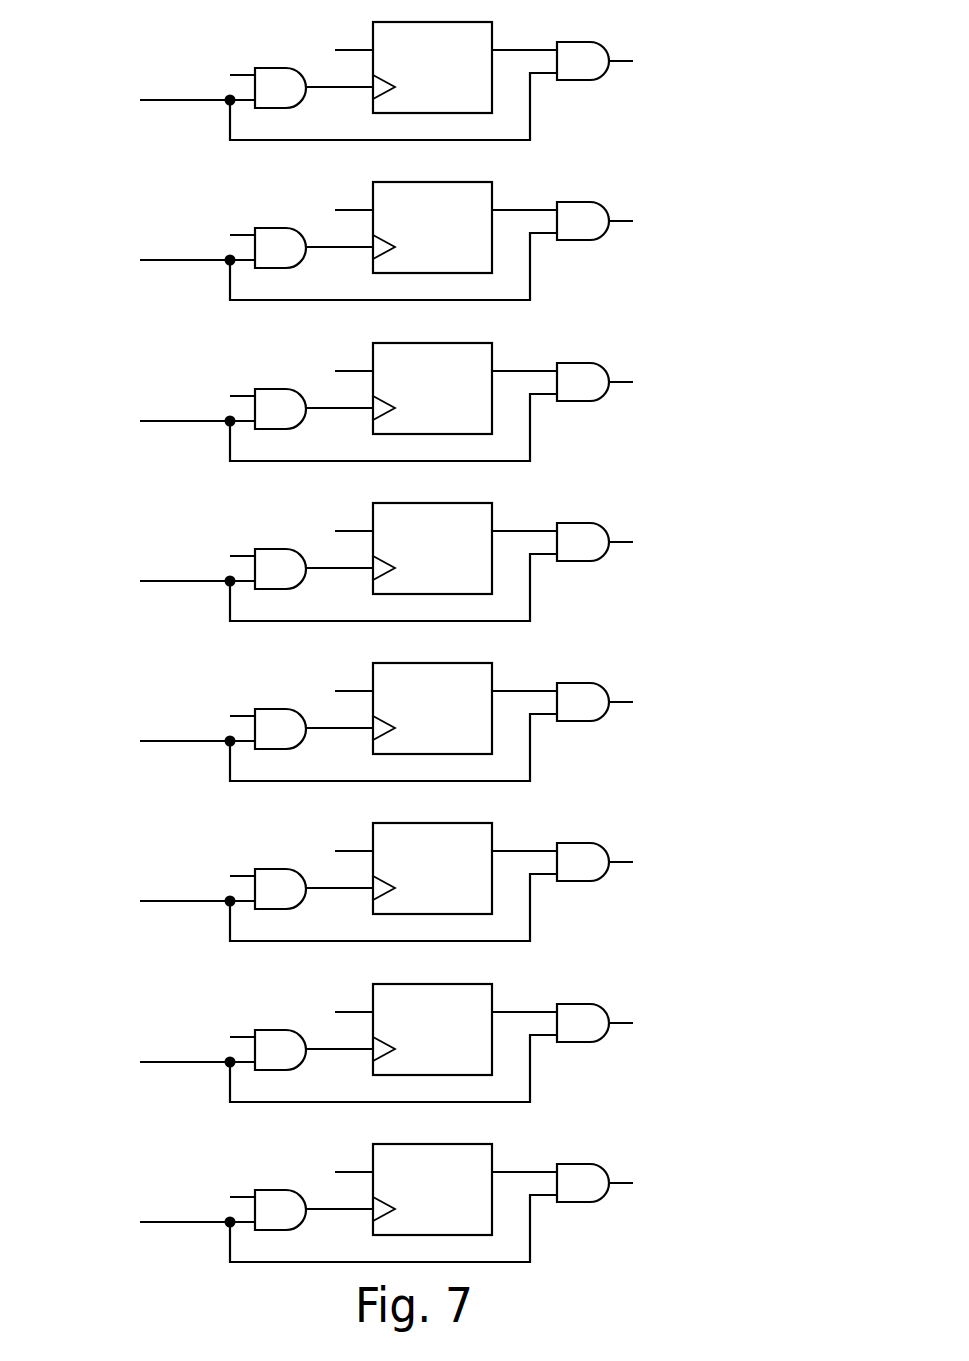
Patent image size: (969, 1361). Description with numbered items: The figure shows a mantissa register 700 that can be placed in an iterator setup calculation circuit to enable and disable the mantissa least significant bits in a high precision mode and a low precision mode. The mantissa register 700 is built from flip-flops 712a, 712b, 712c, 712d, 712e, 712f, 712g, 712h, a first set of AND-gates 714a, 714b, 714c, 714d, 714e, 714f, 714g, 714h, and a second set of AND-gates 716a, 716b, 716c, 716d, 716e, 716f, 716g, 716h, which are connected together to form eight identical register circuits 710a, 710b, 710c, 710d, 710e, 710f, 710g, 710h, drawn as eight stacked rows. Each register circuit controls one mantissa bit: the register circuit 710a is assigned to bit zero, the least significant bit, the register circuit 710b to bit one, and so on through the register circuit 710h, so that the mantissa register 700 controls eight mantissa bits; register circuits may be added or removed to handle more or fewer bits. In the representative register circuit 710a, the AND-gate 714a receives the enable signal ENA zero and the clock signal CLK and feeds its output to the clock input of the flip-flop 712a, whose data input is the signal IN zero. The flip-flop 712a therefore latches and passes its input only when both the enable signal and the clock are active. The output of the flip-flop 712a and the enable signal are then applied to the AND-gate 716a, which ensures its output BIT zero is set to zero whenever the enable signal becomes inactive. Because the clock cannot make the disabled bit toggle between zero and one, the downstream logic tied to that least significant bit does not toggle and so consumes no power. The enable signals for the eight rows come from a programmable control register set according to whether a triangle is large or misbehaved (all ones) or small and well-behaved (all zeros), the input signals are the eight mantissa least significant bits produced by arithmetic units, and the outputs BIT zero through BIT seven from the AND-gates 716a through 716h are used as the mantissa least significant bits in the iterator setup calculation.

The mantissa register 700 is at (126, 50).
The register circuit 710a is at (560, 98).
The register circuit 710b is at (382, 234).
The register circuit 710c is at (382, 395).
The register circuit 710d is at (382, 555).
The register circuit 710e is at (382, 715).
The register circuit 710f is at (382, 875).
The register circuit 710g is at (382, 1036).
The register circuit 710h is at (382, 1196).
The flip-flop 712a is at (432, 67).
The flip-flop 712b is at (432, 227).
The flip-flop 712c is at (432, 388).
The flip-flop 712d is at (432, 548).
The flip-flop 712e is at (432, 708).
The flip-flop 712f is at (432, 868).
The flip-flop 712g is at (432, 1029).
The flip-flop 712h is at (432, 1189).
The AND-gate 714a is at (263, 68).
The AND-gate 714b is at (248, 221).
The AND-gate 714c is at (248, 382).
The AND-gate 714d is at (248, 542).
The AND-gate 714e is at (248, 702).
The AND-gate 714f is at (248, 862).
The AND-gate 714g is at (248, 1023).
The AND-gate 714h is at (248, 1183).
The AND-gate 716a is at (580, 42).
The AND-gate 716b is at (566, 198).
The AND-gate 716c is at (566, 359).
The AND-gate 716d is at (566, 519).
The AND-gate 716e is at (566, 679).
The AND-gate 716f is at (566, 839).
The AND-gate 716g is at (566, 1000).
The AND-gate 716h is at (566, 1160).